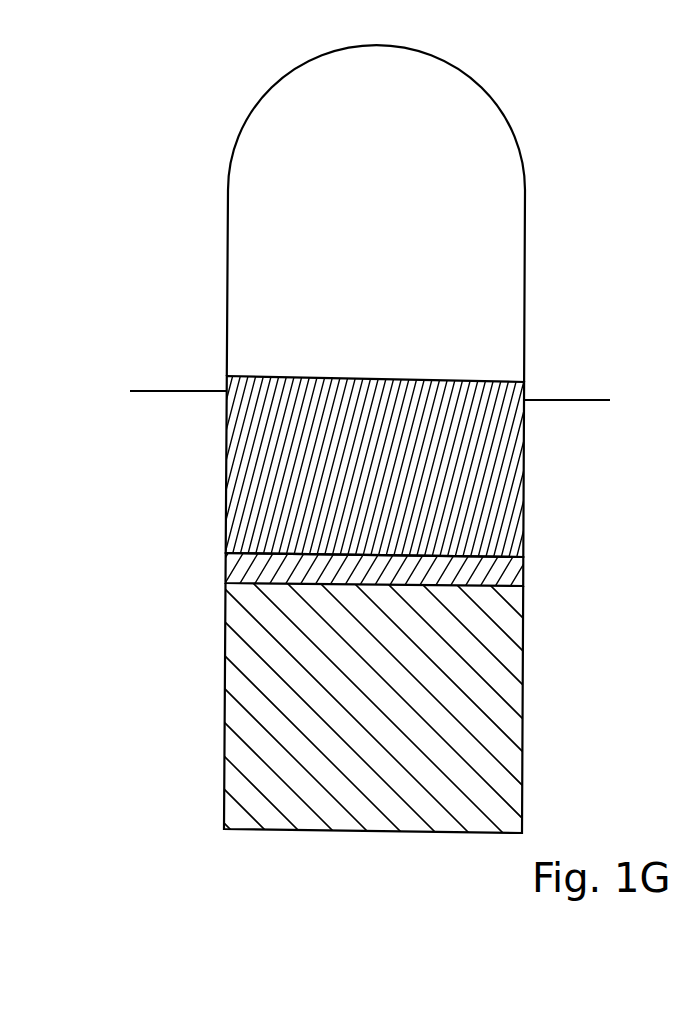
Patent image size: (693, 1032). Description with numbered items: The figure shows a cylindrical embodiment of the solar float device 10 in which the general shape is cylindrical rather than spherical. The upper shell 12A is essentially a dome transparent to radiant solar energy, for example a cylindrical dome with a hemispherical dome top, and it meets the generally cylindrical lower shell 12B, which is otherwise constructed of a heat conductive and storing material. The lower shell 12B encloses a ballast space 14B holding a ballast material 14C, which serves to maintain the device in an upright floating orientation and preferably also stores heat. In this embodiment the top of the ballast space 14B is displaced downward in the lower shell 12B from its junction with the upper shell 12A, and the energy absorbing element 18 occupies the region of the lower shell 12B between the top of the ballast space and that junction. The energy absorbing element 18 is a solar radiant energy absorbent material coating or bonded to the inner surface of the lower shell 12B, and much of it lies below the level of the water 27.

The solar float device 10 is at (346, 438).
The upper shell 12A is at (525, 259).
The lower shell 12B is at (522, 703).
The energy absorbing element 18 is at (510, 470).
The level of the water 27 is at (176, 391).
The ballast space 14B is at (247, 656).
The ballast material 14C is at (257, 760).